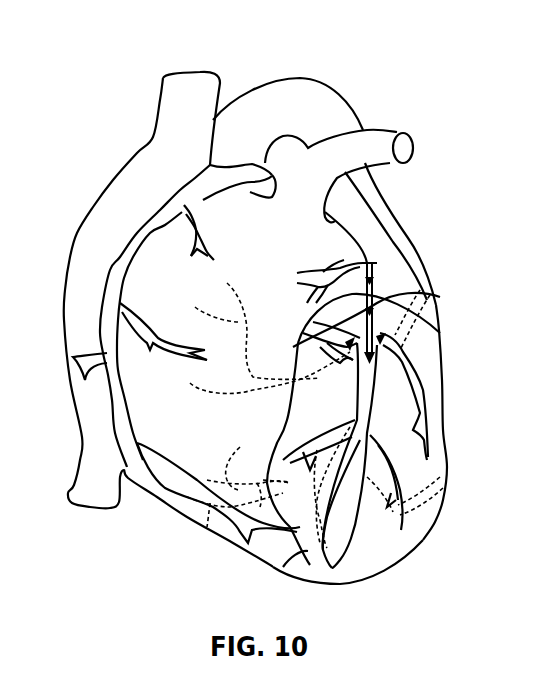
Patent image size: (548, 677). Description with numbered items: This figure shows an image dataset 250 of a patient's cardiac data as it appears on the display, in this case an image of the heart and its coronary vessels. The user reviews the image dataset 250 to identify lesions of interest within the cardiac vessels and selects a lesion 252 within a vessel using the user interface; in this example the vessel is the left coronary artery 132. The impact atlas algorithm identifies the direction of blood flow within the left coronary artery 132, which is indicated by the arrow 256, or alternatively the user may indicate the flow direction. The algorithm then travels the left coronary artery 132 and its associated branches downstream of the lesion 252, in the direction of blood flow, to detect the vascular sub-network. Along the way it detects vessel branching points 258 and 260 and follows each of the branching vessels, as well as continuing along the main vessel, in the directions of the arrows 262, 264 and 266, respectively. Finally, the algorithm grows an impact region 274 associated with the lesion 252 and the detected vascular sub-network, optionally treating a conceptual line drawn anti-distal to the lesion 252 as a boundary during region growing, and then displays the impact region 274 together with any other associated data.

The image dataset 250 is at (133, 46).
The left coronary artery 132 is at (392, 254).
The lesion 252 is at (390, 258).
The arrow 256 is at (361, 265).
The vessel branching point 258 is at (362, 366).
The vessel branching point 260 is at (380, 348).
The arrow 262 is at (307, 281).
The arrow 264 is at (425, 304).
The arrow 266 is at (313, 322).
The impact region 274 is at (283, 566).